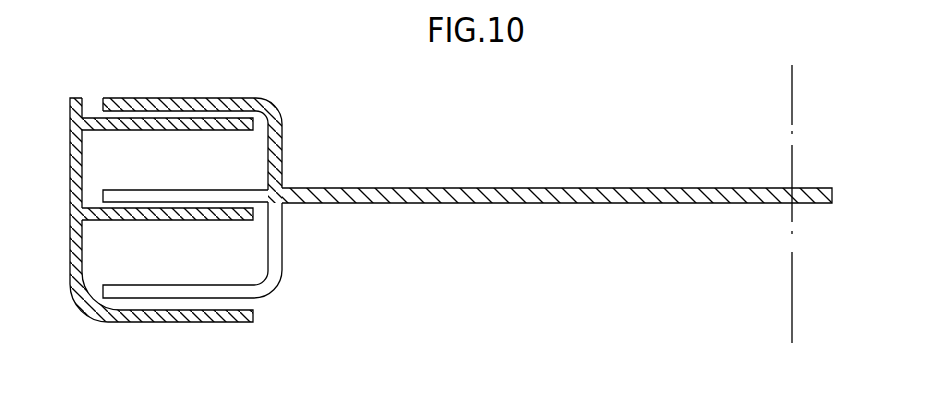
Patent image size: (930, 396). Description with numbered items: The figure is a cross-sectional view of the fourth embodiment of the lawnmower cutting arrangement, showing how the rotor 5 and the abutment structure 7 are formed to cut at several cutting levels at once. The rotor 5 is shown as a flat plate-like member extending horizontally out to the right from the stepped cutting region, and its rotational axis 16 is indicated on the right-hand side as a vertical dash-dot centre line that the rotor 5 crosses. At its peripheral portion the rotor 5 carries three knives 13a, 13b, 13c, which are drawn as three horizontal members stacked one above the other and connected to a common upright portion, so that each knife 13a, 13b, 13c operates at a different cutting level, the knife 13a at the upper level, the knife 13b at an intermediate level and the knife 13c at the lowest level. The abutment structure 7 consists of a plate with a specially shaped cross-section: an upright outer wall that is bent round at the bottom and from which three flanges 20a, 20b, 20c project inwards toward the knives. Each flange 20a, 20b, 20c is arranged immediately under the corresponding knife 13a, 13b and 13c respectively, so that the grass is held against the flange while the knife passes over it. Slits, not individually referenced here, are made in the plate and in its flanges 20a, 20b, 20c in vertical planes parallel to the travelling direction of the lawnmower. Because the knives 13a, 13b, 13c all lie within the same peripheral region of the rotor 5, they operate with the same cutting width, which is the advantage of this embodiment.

The rotor 5 is at (501, 188).
The abutment structure 7 is at (70, 184).
The knife 13a is at (183, 100).
The knife 13b is at (209, 188).
The knife 13c is at (211, 284).
The rotational axis 16 is at (790, 118).
The flange 20a is at (130, 131).
The flange 20b is at (128, 221).
The flange 20c is at (134, 323).